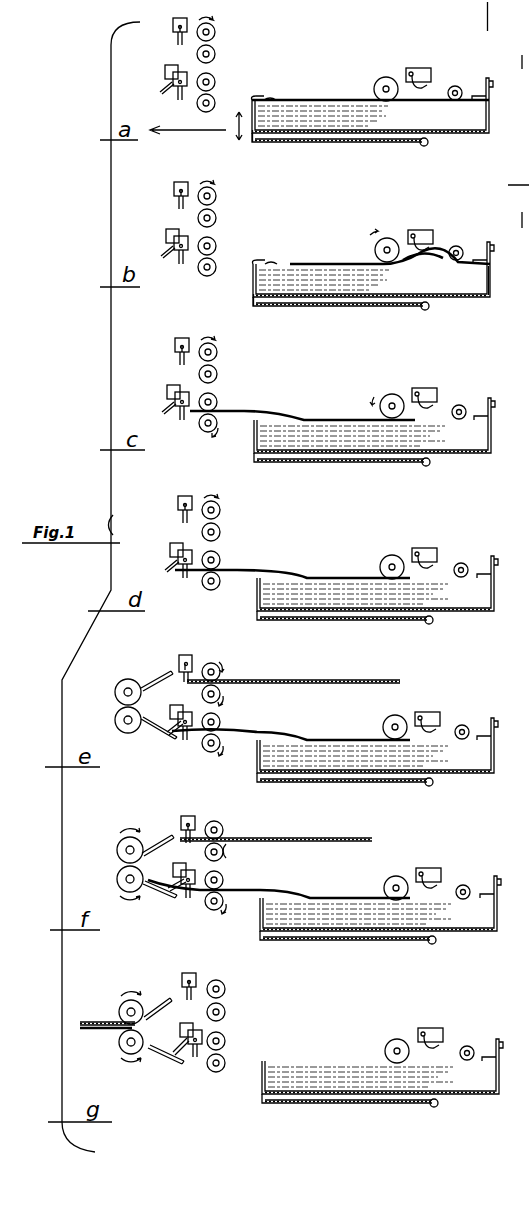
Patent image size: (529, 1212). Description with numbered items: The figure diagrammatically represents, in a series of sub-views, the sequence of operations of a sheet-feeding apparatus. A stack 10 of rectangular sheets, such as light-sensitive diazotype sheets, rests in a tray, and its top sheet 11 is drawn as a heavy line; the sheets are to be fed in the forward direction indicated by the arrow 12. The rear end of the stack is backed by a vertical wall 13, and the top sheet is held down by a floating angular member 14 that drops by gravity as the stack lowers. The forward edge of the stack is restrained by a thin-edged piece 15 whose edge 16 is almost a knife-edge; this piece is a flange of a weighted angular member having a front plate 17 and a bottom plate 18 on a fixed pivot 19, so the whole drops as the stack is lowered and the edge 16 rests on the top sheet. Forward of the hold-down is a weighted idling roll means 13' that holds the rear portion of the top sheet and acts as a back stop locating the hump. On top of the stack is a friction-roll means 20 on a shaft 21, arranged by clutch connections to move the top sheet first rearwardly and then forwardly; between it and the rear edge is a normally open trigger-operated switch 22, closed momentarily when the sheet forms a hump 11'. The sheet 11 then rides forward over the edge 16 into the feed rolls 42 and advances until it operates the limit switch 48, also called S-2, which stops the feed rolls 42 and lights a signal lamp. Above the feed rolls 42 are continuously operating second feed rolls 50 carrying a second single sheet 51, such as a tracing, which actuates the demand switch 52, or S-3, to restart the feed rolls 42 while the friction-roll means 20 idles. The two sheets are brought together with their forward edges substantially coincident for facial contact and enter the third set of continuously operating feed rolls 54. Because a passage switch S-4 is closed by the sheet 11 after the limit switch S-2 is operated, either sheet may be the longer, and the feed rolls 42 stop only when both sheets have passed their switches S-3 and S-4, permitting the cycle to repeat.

The stack 10 is at (460, 118).
The top sheet 11 is at (285, 564).
The hump 11' is at (408, 236).
The arrow 12 is at (168, 130).
The vertical wall 13 is at (509, 148).
The idling roll means 13' is at (459, 559).
The floating angular member 14 is at (483, 78).
The thin-edged piece 15 is at (252, 100).
The edge 16 is at (270, 100).
The front plate 17 is at (250, 136).
The bottom plate 18 is at (320, 143).
The fixed pivot 19 is at (422, 147).
The friction-roll means 20 is at (385, 77).
The shaft 21 is at (374, 90).
The trigger-operated switch 22 is at (428, 68).
The feed rolls 42 is at (216, 400).
The limit switch 48 is at (175, 392).
The second feed rolls 50 is at (222, 510).
The second single sheet 51 is at (302, 680).
The demand switch 52 is at (178, 662).
The third set of feed rolls 54 is at (117, 850).
The limit switch S-2 is at (182, 421).
The demand switch S-3 is at (176, 500).
The passage switch S-4 is at (187, 862).